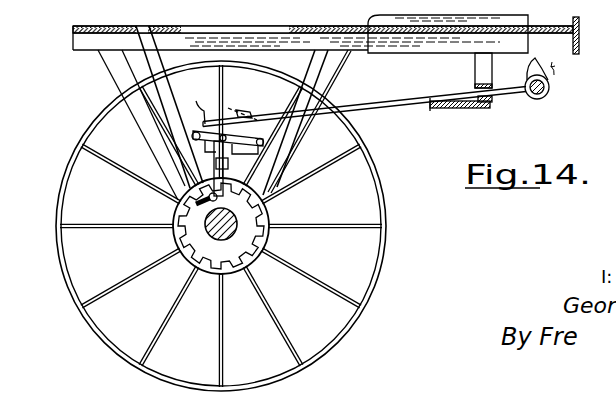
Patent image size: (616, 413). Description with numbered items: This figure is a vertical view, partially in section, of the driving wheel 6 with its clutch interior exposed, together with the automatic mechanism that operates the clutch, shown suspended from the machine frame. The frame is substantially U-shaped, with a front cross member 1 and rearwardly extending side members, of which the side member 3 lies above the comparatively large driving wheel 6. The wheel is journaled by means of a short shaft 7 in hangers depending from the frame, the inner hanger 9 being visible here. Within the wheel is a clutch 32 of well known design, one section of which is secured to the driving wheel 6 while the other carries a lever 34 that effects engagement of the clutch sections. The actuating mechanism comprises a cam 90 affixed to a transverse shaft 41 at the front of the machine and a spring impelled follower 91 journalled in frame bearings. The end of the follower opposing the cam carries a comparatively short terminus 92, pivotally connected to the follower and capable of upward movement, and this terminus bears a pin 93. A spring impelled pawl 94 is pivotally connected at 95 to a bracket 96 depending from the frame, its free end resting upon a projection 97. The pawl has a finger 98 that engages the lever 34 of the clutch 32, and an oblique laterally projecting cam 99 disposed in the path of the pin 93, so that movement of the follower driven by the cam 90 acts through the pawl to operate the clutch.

The front cross member 1 is at (580, 33).
The side member 3 is at (259, 26).
The driving wheel 6 is at (387, 258).
The shaft 7 is at (212, 236).
The inner hanger 9 is at (115, 77).
The clutch 32 is at (270, 242).
The lever 34 is at (178, 168).
The shaft 41 is at (535, 98).
The cam 90 is at (556, 73).
The follower 91 is at (368, 108).
The terminus 92 is at (258, 114).
The pin 93 is at (249, 118).
The pawl 94 is at (277, 140).
The pivot 95 is at (194, 129).
The bracket 96 is at (153, 50).
The projection 97 is at (263, 144).
The finger 98 is at (264, 193).
The cam 99 is at (236, 113).